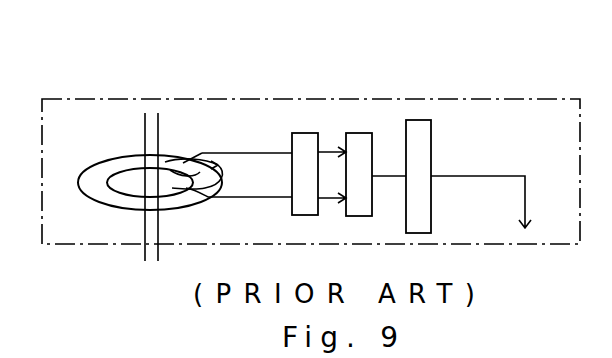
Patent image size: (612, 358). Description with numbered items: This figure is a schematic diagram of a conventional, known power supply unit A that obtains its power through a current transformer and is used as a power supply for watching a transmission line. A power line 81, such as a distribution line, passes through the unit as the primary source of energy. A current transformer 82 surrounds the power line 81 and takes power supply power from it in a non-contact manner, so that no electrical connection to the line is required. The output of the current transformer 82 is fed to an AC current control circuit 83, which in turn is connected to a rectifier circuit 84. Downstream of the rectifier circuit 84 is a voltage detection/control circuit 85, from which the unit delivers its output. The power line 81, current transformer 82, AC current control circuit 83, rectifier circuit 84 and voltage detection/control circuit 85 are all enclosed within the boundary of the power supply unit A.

The power supply unit A is at (73, 98).
The power line 81 is at (155, 130).
The current transformer 82 is at (182, 152).
The AC current control circuit 83 is at (303, 133).
The rectifier circuit 84 is at (359, 133).
The voltage detection/control circuit 85 is at (419, 120).